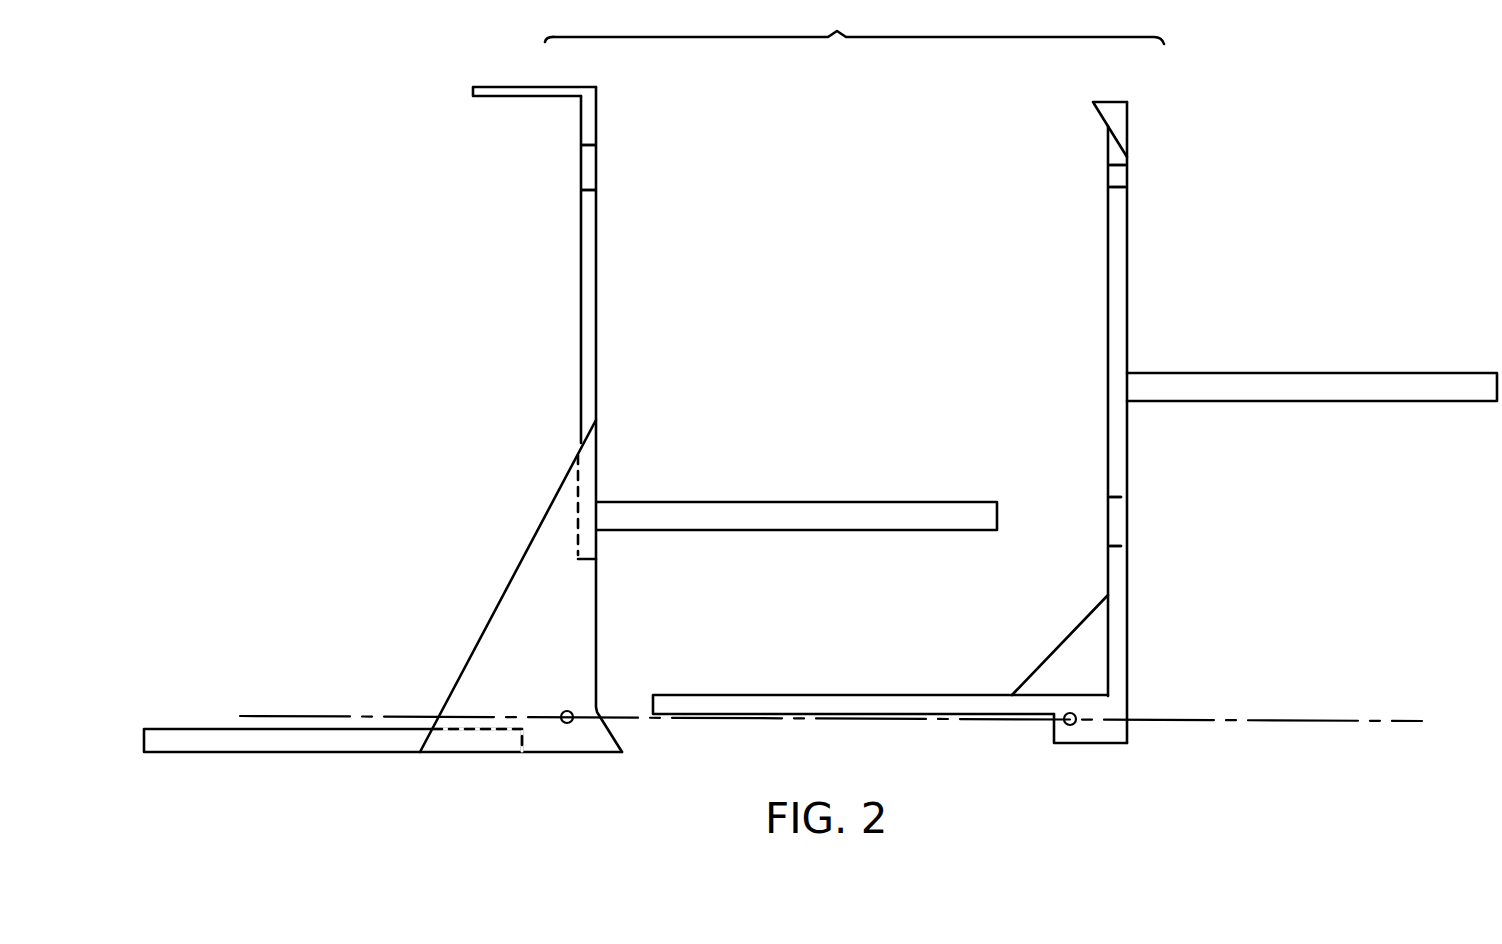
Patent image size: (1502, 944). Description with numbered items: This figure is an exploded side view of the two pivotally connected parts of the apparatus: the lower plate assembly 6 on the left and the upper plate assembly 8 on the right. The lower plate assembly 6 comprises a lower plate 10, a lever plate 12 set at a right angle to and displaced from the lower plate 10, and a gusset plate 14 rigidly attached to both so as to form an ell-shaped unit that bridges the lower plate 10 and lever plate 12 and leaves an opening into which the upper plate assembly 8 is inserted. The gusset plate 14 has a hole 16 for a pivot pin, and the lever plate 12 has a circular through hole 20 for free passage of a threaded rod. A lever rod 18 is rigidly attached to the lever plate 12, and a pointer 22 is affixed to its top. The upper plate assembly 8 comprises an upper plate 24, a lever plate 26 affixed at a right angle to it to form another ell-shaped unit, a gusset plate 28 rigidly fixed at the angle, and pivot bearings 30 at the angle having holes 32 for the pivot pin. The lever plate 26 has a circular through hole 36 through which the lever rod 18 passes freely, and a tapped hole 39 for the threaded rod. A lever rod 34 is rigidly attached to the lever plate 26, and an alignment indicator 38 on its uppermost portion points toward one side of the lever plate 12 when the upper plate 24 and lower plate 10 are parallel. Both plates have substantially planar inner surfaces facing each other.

The lower plate assembly 6 is at (687, 435).
The upper plate assembly 8 is at (1075, 447).
The lower plate 10 is at (293, 752).
The lever plate 12 is at (578, 308).
The gusset plate 14 is at (498, 600).
The hole 16 is at (563, 722).
The lever rod 18 is at (706, 530).
The circular through hole 20 is at (598, 162).
The pointer 22 is at (515, 88).
The upper plate 24 is at (823, 690).
The lever plate 26 is at (1105, 327).
The gusset plate 28 is at (1068, 632).
The pivot bearings 30 is at (1115, 728).
The holes 32 is at (1068, 726).
The lever rod 34 is at (1235, 372).
The circular through hole 36 is at (1127, 518).
The alignment indicator 38 is at (1125, 103).
The hole 39 is at (1128, 168).